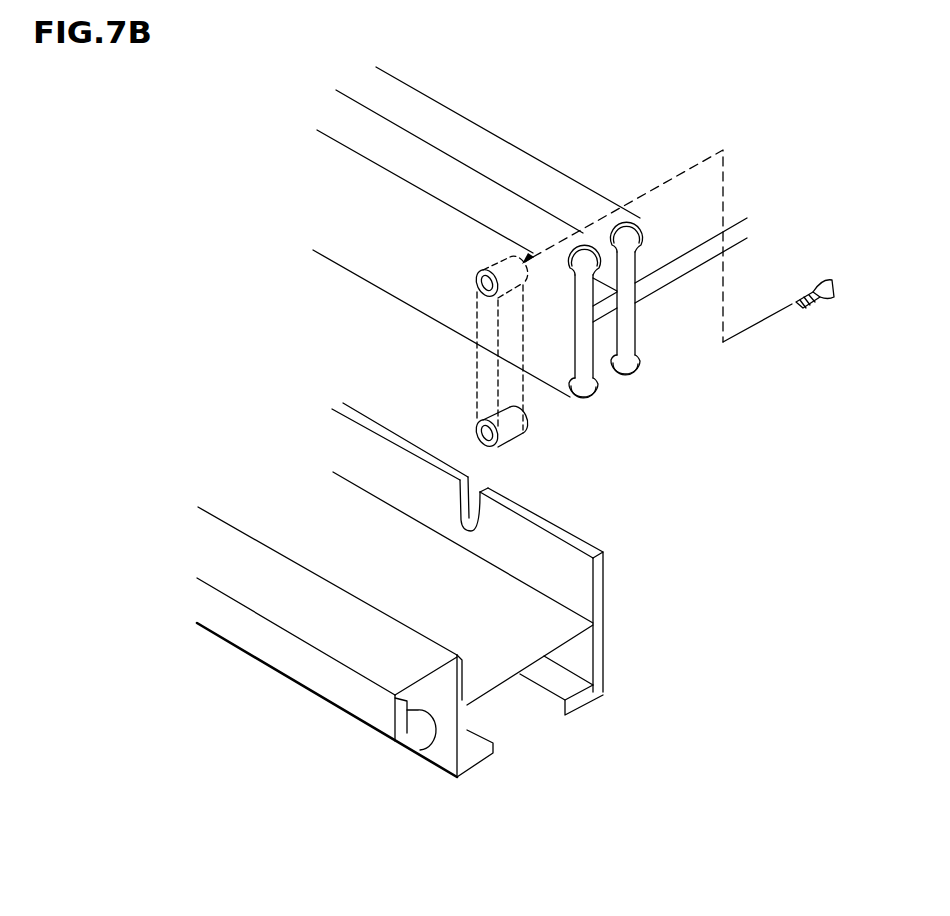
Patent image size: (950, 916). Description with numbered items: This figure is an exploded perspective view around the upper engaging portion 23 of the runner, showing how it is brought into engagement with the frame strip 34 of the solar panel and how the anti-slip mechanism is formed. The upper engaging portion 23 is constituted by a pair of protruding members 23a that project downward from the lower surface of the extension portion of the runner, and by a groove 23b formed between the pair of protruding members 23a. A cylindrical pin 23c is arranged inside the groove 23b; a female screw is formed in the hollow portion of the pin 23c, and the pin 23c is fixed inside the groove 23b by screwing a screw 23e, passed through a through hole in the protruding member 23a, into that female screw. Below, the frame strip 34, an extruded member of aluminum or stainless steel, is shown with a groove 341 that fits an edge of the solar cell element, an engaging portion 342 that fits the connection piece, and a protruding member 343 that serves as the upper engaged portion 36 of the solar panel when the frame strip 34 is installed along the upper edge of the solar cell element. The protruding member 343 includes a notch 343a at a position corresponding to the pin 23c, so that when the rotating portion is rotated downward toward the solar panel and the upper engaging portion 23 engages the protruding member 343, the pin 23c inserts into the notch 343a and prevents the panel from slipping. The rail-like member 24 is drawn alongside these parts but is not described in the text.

The rail 24 is at (497, 135).
The upper engaging portion 23 is at (658, 334).
The protruding member 23a is at (594, 393).
The groove 23b is at (610, 333).
The cylindrical pin 23c is at (508, 432).
The screw 23e is at (800, 284).
The frame strip 34 is at (468, 599).
The upper engaged portion 36 is at (536, 547).
The protruding member 343 is at (536, 547).
The notch 343a is at (482, 485).
The engaging portion 342 is at (568, 690).
The groove 341 is at (423, 752).